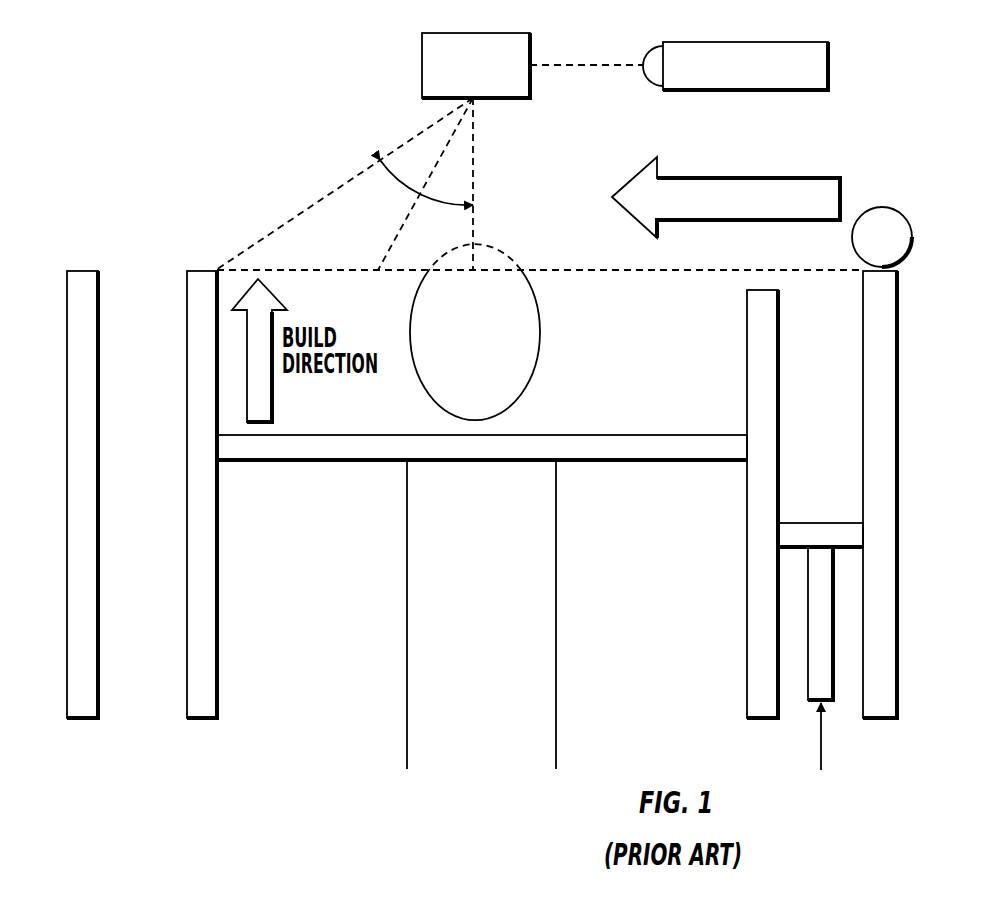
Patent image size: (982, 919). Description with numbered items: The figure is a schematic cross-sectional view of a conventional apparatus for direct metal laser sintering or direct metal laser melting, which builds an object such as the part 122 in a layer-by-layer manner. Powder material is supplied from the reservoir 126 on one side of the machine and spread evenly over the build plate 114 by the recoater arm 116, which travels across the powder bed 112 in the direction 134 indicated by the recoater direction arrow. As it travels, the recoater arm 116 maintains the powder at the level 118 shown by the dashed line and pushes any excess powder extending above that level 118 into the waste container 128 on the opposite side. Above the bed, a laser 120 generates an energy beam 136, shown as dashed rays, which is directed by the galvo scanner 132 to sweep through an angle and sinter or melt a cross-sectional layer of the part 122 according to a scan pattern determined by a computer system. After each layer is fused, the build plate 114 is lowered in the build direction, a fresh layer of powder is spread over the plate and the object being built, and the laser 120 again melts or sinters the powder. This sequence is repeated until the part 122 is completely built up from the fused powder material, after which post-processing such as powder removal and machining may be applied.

The powder bed 112 is at (615, 285).
The build plate 114 is at (678, 434).
The recoater arm 116 is at (880, 207).
The powder level 118 is at (355, 268).
The laser 120 is at (828, 70).
The part 122 is at (410, 325).
The reservoir 126 is at (850, 366).
The waste container 128 is at (172, 597).
The galvo scanner 132 is at (422, 65).
The direction 134 is at (613, 195).
The energy beam 136 is at (427, 177).